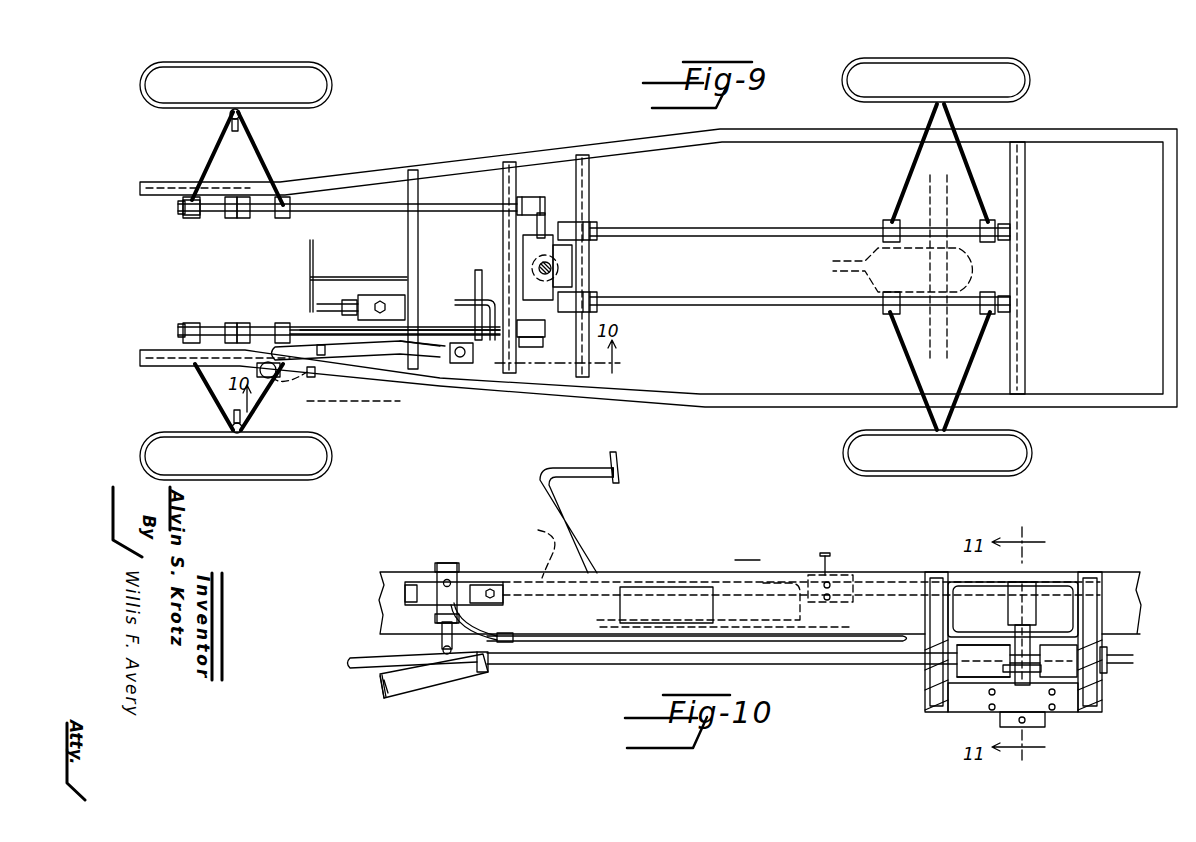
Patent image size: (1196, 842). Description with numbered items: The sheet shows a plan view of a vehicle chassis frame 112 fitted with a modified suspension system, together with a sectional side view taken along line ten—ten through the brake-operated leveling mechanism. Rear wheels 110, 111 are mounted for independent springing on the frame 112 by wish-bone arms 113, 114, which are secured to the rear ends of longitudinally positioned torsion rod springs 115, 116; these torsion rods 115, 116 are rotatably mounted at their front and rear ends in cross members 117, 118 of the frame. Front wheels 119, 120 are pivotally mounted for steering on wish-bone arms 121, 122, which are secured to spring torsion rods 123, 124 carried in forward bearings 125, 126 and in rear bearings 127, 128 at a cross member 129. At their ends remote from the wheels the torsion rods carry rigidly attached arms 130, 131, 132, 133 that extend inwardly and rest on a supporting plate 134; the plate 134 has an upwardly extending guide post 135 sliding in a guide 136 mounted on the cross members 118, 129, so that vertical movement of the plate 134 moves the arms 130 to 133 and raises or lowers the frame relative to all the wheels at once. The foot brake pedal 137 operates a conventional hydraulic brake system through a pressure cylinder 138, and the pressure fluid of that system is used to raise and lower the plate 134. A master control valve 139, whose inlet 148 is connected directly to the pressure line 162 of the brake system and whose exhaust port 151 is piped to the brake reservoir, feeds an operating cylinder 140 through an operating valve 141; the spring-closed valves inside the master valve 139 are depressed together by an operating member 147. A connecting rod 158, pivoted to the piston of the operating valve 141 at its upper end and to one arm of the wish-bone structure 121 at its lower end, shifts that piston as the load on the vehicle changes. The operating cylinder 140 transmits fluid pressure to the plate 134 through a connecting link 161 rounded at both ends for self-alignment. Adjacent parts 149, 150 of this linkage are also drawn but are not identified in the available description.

In FIG. 9, the rear wheel 110 is at (1013, 75).
In FIG. 9, the rear wheel 111 is at (1017, 445).
In FIG. 9, the vehicle frame 112 is at (1108, 108).
In FIG. 10, the vehicle frame 112 is at (1125, 578).
In FIG. 9, the wish-bone arm 113 is at (912, 160).
In FIG. 9, the wish-bone arm 114 is at (905, 357).
In FIG. 9, the torsion rod spring 115 is at (826, 208).
In FIG. 9, the torsion rod spring 116 is at (843, 302).
In FIG. 9, the cross member 117 is at (1022, 207).
In FIG. 9, the cross member 118 is at (587, 180).
In FIG. 10, the cross member 118 is at (1090, 572).
In FIG. 9, the front wheel 119 is at (272, 468).
In FIG. 9, the front wheel 120 is at (200, 95).
In FIG. 9, the wish-bone arm 121 is at (215, 405).
In FIG. 10, the wish-bone arm 121 is at (420, 677).
In FIG. 9, the wish-bone arm 122 is at (205, 145).
In FIG. 9, the spring torsion rod 123 is at (305, 330).
In FIG. 10, the spring torsion rod 123 is at (877, 661).
In FIG. 9, the spring torsion rod 124 is at (363, 205).
In FIG. 9, the forward bearing 125 is at (238, 325).
In FIG. 9, the forward bearing 126 is at (237, 218).
In FIG. 9, the rear bearing 127 is at (523, 345).
In FIG. 10, the rear bearing 127 is at (960, 668).
In FIG. 9, the rear bearing 128 is at (520, 198).
In FIG. 9, the cross member 129 is at (503, 175).
In FIG. 10, the cross member 129 is at (936, 572).
In FIG. 9, the arm 130 is at (580, 292).
In FIG. 10, the arm 130 is at (1100, 681).
In FIG. 9, the arm 131 is at (565, 254).
In FIG. 9, the arm 132 is at (567, 318).
In FIG. 10, the arm 132 is at (960, 700).
In FIG. 9, the arm 133 is at (541, 212).
In FIG. 9, the supporting plate 134 is at (530, 250).
In FIG. 10, the supporting plate 134 is at (1060, 703).
In FIG. 9, the guide post 135 is at (552, 268).
In FIG. 10, the guide post 135 is at (1022, 640).
In FIG. 10, the guide 136 is at (1040, 583).
In FIG. 9, the foot brake pedal 137 is at (316, 275).
In FIG. 10, the foot brake pedal 137 is at (573, 535).
In FIG. 9, the pressure cylinder 138 is at (380, 295).
In FIG. 10, the pressure cylinder 138 is at (655, 613).
In FIG. 9, the master control valve 139 is at (465, 340).
In FIG. 10, the master control valve 139 is at (805, 590).
In FIG. 10, the operating cylinder 140 is at (1045, 725).
In FIG. 9, the operating valve 141 is at (283, 383).
In FIG. 10, the operating valve 141 is at (460, 587).
In FIG. 9, the operating member 147 is at (455, 363).
In FIG. 10, the operating member 147 is at (820, 553).
In FIG. 9, the inlet 148 is at (485, 345).
In FIG. 10, the inlet 148 is at (853, 575).
In FIG. 9, the cable 149 is at (385, 357).
In FIG. 10, the cable 149 is at (563, 598).
In FIG. 9, the lever 150 is at (368, 374).
In FIG. 10, the lever 150 is at (545, 532).
In FIG. 9, the exhaust port 151 is at (455, 348).
In FIG. 10, the exhaust port 151 is at (735, 560).
In FIG. 10, the connecting rod 158 is at (442, 650).
In FIG. 10, the connecting link 161 is at (1010, 683).
In FIG. 9, the pressure line 162 is at (482, 250).
In FIG. 10, the pressure line 162 is at (740, 650).